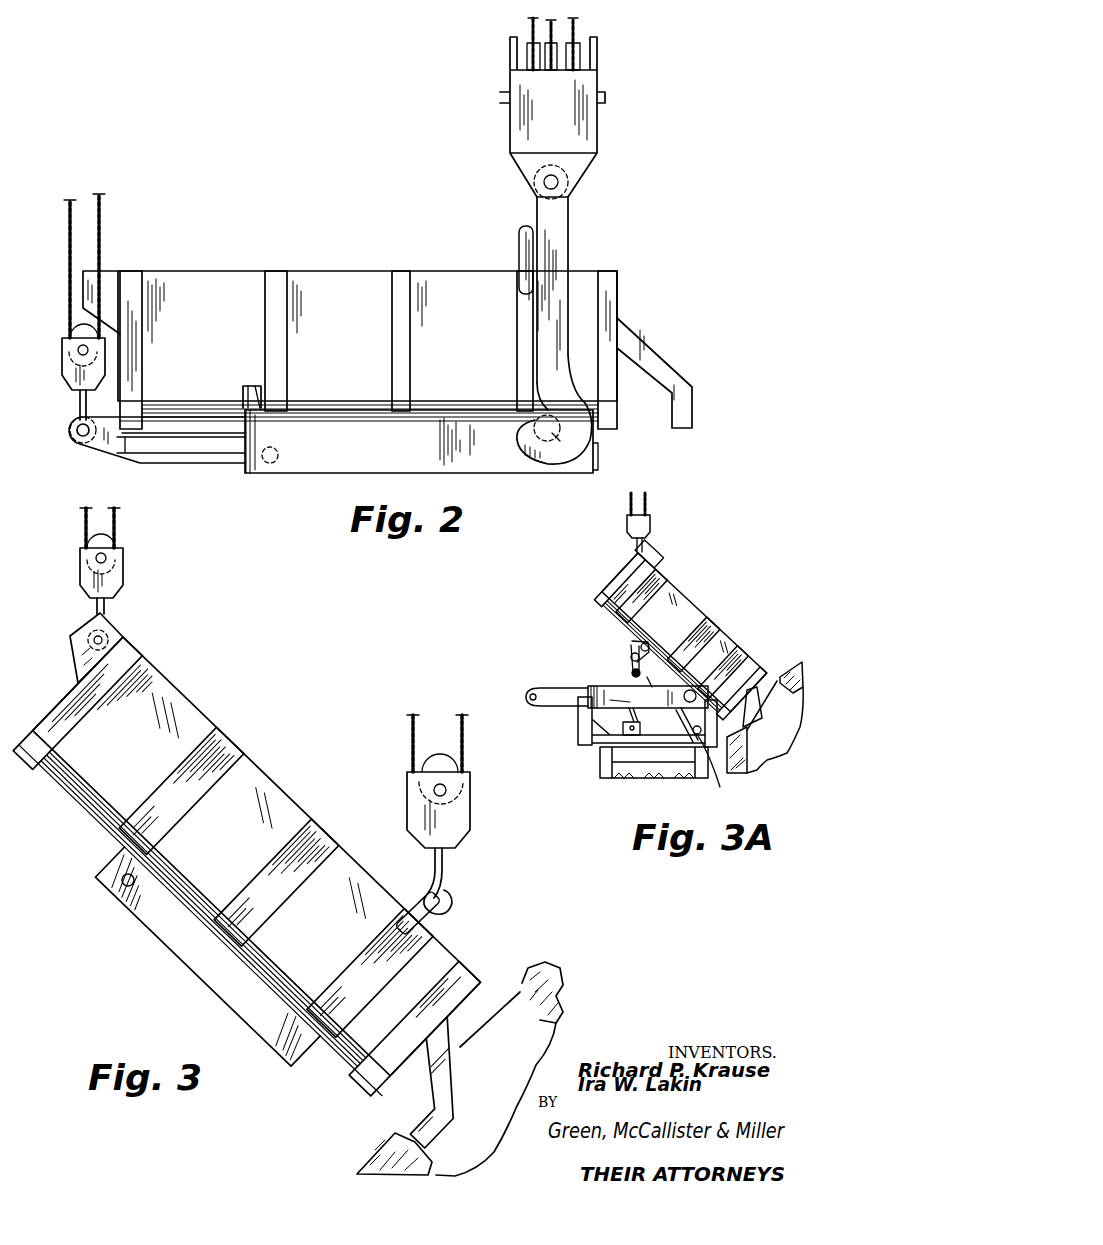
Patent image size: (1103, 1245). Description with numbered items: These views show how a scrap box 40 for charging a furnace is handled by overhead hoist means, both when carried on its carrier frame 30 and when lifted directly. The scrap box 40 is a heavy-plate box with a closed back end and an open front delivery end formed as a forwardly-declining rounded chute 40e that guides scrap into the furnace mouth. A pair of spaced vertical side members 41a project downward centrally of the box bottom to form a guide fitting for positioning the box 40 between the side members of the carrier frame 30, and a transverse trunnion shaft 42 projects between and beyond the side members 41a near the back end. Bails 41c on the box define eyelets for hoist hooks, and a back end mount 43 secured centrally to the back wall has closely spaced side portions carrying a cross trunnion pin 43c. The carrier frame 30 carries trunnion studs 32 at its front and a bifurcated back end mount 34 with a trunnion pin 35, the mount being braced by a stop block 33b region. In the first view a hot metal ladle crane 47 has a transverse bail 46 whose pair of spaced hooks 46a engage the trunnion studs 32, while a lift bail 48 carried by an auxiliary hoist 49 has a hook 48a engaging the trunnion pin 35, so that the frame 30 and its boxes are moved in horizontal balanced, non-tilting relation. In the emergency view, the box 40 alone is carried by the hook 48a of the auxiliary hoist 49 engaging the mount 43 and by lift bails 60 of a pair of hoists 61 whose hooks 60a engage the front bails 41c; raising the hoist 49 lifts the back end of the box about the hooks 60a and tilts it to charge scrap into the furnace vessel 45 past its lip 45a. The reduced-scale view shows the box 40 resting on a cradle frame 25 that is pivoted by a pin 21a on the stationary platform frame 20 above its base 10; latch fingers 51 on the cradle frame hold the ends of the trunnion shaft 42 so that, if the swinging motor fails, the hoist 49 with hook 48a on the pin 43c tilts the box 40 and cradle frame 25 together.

In FIG. 3A, the base frame 10 is at (600, 768).
In FIG. 3A, the platform frame 20 is at (578, 738).
In FIG. 3A, the pin 21a is at (716, 780).
In FIG. 3A, the cradle frame 25 is at (676, 718).
In FIG. 2, the carrier frame 30 is at (480, 475).
In FIG. 3A, the carrier frame 30 is at (614, 688).
In FIG. 2, the trunnion studs 32 is at (556, 438).
In FIG. 2, the stop block 33b is at (250, 385).
In FIG. 2, the back end mount 34 is at (203, 470).
In FIG. 3A, the back end mount 34 is at (570, 688).
In FIG. 2, the trunnion pin 35 is at (66, 432).
In FIG. 2, the scrap box 40 is at (338, 270).
In FIG. 3, the scrap box 40 is at (224, 714).
In FIG. 3A, the scrap box 40 is at (700, 612).
In FIG. 2, the chute 40e is at (692, 408).
In FIG. 3, the vertical side members 41a is at (166, 952).
In FIG. 2, the bails 41c is at (519, 242).
In FIG. 3, the bails 41c is at (437, 914).
In FIG. 2, the trunnion shaft 42 is at (274, 468).
In FIG. 3, the trunnion shaft 42 is at (120, 886).
In FIG. 2, the back end mount 43 is at (108, 270).
In FIG. 3, the back end mount 43 is at (74, 670).
In FIG. 3A, the back end mount 43 is at (626, 558).
In FIG. 3, the cross trunnion pin 43c is at (70, 645).
In FIG. 3, the furnace vessel 45 is at (570, 980).
In FIG. 3A, the furnace vessel 45 is at (760, 770).
In FIG. 3, the obstruction 45a is at (516, 983).
In FIG. 3A, the obstruction 45a is at (780, 680).
In FIG. 2, the transverse bail 46 is at (580, 128).
In FIG. 2, the hooks 46a is at (567, 218).
In FIG. 2, the hot metal ladle crane 47 is at (576, 26).
In FIG. 2, the lift bail 48 is at (62, 361).
In FIG. 3, the lift bail 48 is at (80, 576).
In FIG. 3A, the lift bail 48 is at (652, 526).
In FIG. 2, the hook 48a is at (79, 407).
In FIG. 3, the hook 48a is at (108, 600).
In FIG. 3A, the hook 48a is at (645, 545).
In FIG. 2, the auxiliary hoist 49 is at (62, 290).
In FIG. 3, the auxiliary hoist 49 is at (80, 522).
In FIG. 3A, the auxiliary hoist 49 is at (648, 496).
In FIG. 3A, the latch fingers 51 is at (628, 640).
In FIG. 3, the lift bails 60 is at (474, 790).
In FIG. 3, the hooks 60a is at (447, 862).
In FIG. 3, the hoists 61 is at (466, 720).